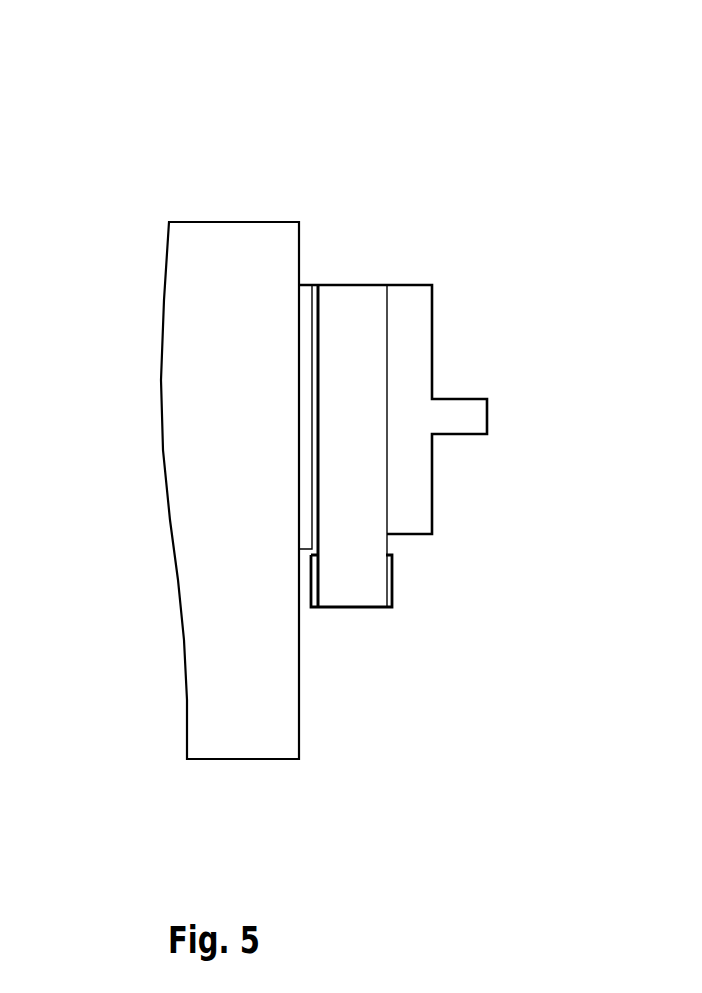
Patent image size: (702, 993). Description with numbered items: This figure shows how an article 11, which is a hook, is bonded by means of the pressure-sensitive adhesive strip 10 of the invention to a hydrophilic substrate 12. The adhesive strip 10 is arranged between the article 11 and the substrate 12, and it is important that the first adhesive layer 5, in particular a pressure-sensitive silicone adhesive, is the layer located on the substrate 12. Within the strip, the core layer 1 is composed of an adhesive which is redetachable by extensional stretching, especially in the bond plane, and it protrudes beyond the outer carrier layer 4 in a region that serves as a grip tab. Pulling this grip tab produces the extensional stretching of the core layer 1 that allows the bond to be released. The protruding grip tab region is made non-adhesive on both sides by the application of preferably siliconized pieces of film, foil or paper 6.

The pressure-sensitive adhesive strip 10 is at (362, 238).
The hydrophilic substrate 12 is at (264, 639).
The article 11 is at (424, 434).
The first adhesive layer 5 is at (305, 376).
The outer carrier layer 4 is at (317, 531).
The core layer 1 is at (338, 567).
The pieces of film, foil or paper 6 is at (390, 567).